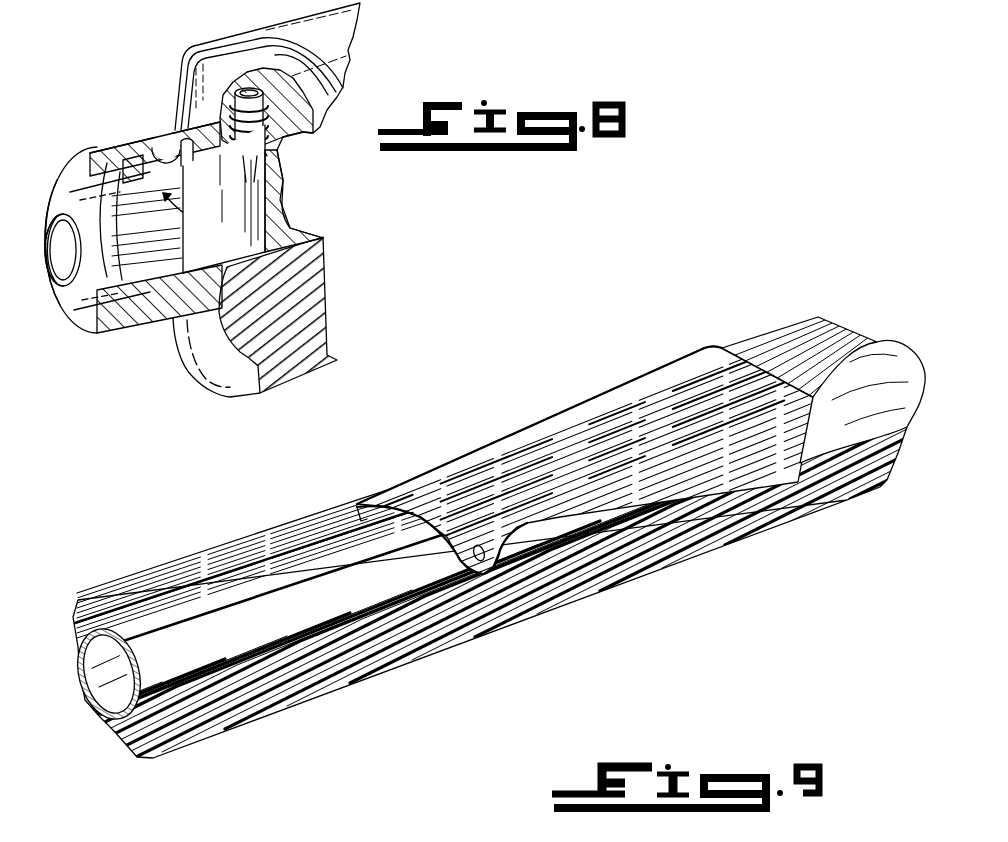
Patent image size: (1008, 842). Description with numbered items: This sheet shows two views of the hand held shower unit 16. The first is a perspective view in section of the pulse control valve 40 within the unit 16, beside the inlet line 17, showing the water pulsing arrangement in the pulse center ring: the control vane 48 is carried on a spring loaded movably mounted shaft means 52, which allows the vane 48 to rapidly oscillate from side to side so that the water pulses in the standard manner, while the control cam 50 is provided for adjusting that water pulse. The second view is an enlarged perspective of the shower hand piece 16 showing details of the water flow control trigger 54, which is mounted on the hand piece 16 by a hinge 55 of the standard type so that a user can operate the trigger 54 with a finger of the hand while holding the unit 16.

In FIG. 8, the hand held shower unit 16 is at (216, 357).
In FIG. 9, the hand held shower unit 16 is at (289, 527).
In FIG. 8, the inlet line 17 is at (93, 227).
In FIG. 8, the pulse control valve 40 is at (337, 240).
In FIG. 8, the control vane 48 is at (265, 199).
In FIG. 8, the control cam 50 is at (175, 130).
In FIG. 8, the spring loaded movably mounted shaft means 52 is at (250, 96).
In FIG. 9, the water flow control trigger 54 is at (612, 433).
In FIG. 9, the hinge 55 is at (487, 547).